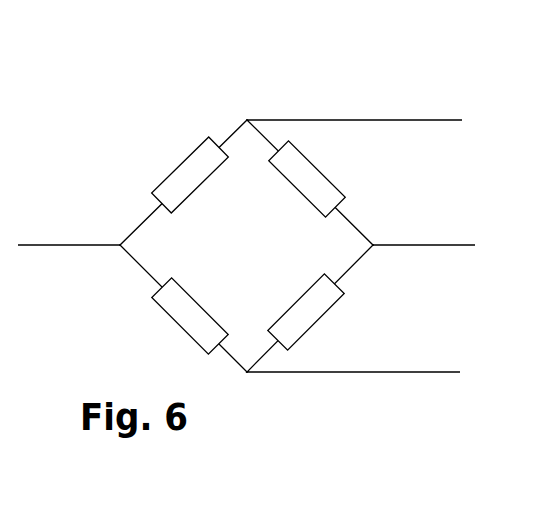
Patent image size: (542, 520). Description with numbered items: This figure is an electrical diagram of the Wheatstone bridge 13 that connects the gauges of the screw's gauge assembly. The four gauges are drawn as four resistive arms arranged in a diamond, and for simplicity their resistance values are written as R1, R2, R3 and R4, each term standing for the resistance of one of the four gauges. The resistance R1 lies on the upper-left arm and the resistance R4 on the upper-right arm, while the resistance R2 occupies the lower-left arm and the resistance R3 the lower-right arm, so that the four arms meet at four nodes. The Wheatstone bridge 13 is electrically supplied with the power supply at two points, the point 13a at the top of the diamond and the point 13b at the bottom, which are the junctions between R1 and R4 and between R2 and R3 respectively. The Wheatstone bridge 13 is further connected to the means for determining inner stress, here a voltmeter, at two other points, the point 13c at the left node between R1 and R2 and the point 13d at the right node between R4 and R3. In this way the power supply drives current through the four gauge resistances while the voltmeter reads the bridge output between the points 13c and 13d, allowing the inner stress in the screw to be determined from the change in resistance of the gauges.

The Wheatstone bridge 13 is at (118, 133).
The power supply point 13a is at (247, 120).
The power supply point 13b is at (247, 372).
The measurement point 13c is at (118, 248).
The measurement point 13d is at (377, 250).
The resistance of the first gauge R1 is at (171, 173).
The resistance of the second gauge R2 is at (183, 330).
The resistance of the third gauge R3 is at (308, 332).
The resistance of the fourth gauge R4 is at (308, 156).